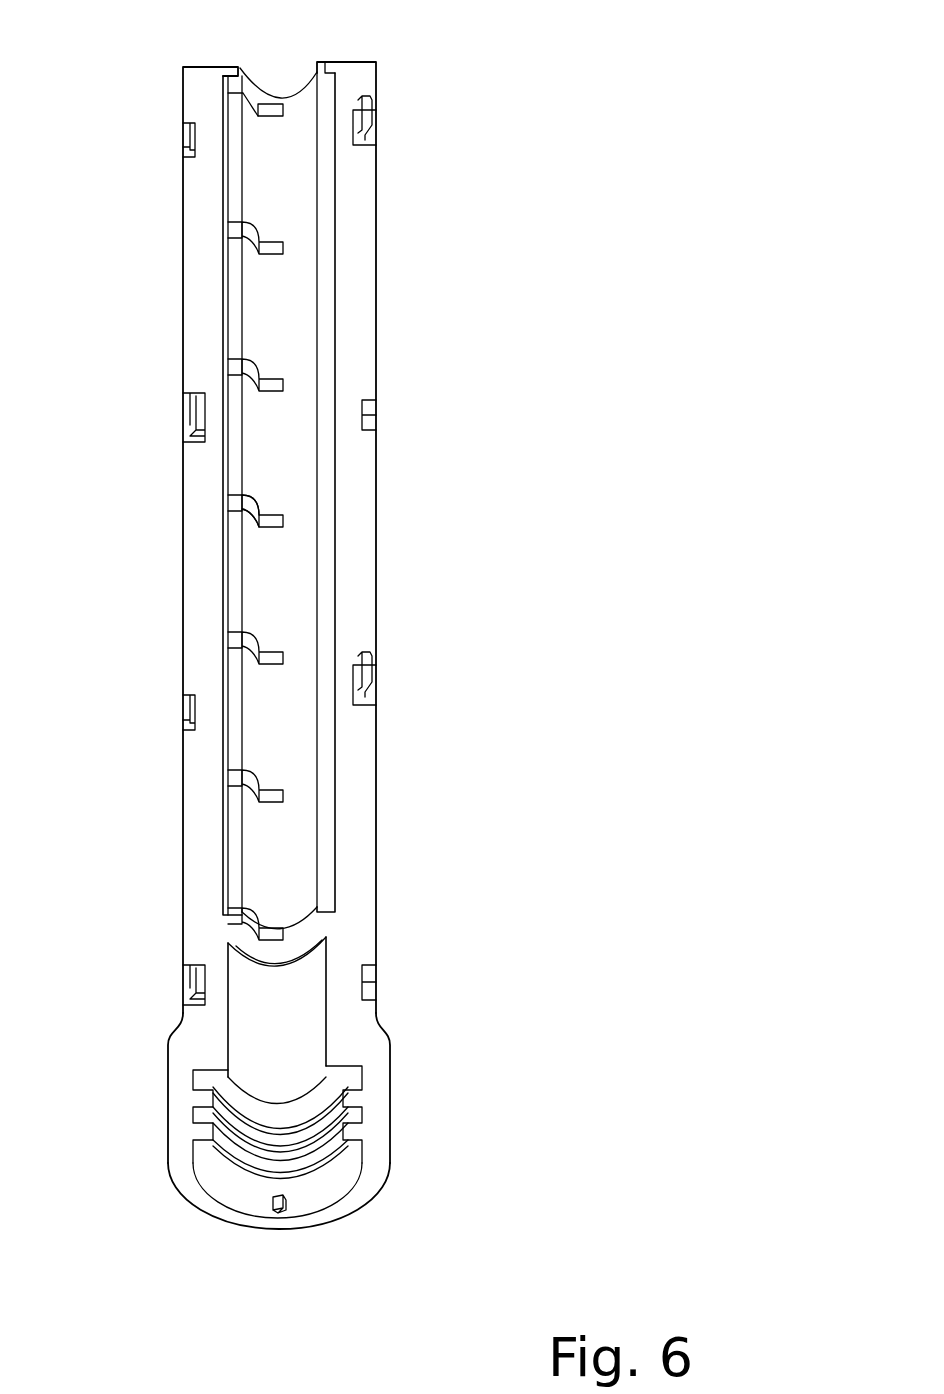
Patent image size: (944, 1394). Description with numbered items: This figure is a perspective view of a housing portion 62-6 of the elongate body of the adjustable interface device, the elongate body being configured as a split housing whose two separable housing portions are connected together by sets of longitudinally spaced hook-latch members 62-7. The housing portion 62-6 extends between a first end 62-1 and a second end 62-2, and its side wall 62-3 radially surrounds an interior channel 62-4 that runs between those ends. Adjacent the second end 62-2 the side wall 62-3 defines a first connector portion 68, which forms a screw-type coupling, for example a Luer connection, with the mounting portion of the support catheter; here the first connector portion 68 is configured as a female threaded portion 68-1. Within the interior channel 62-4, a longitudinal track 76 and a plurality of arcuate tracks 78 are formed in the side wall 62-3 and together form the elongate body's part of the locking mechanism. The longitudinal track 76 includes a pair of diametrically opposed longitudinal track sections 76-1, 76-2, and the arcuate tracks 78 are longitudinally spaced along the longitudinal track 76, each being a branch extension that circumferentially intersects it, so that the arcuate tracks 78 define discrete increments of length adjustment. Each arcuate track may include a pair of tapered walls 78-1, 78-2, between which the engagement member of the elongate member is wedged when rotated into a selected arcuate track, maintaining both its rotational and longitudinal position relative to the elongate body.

The longitudinal track 76 is at (189, 468).
The longitudinal track section 76-1 is at (320, 70).
The longitudinal track section 76-2 is at (232, 115).
The first end 62-1 is at (355, 62).
The hook-latch members 62-7 is at (183, 410).
The arcuate tracks 78 is at (283, 112).
The housing portion 62-6 is at (183, 565).
The tapered wall 78-1 is at (262, 505).
The tapered wall 78-2 is at (258, 528).
The side wall 62-3 is at (195, 1027).
The first connector portion 68 is at (360, 1189).
The second end 62-2 is at (205, 1213).
The interior channel 62-4 is at (273, 1112).
The female threaded portion 68-1 is at (290, 1180).